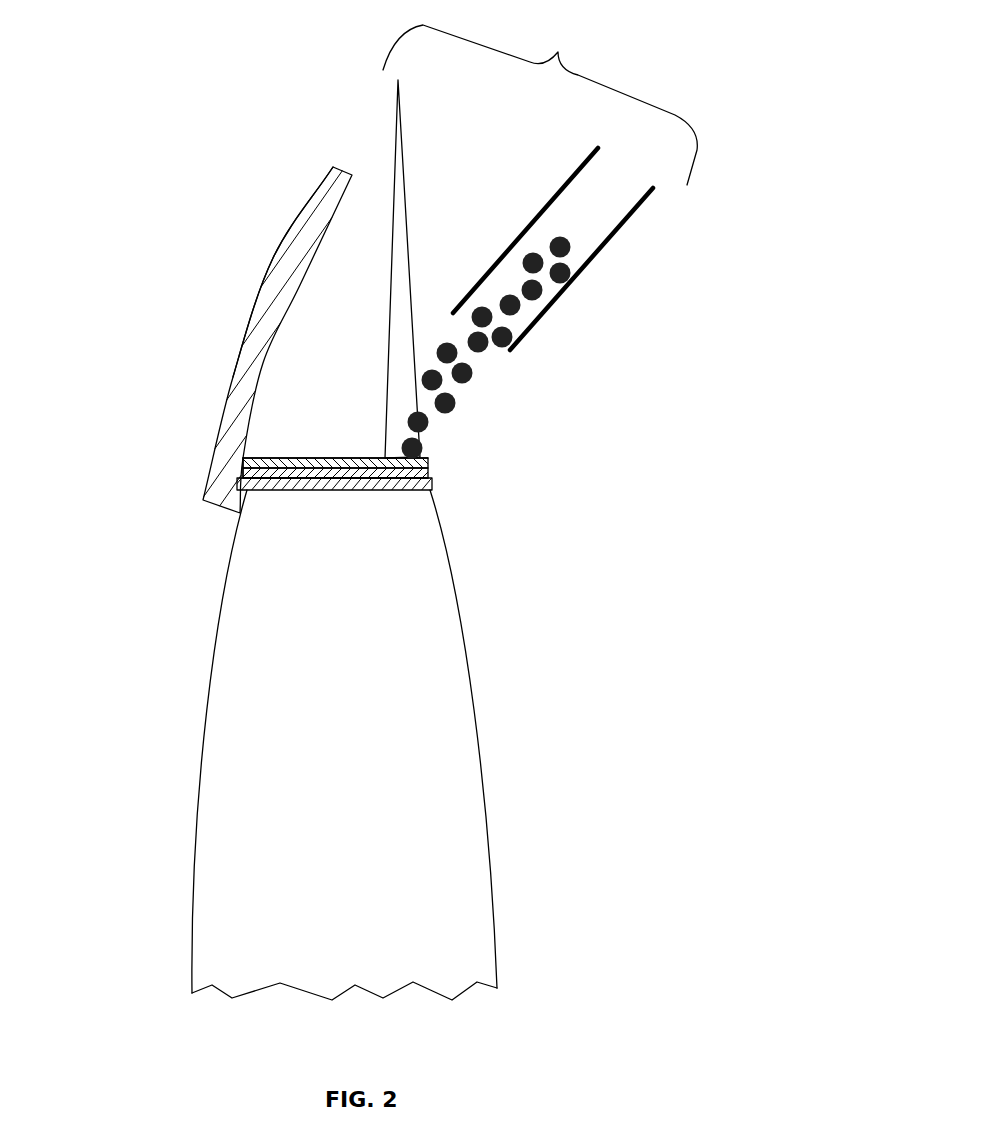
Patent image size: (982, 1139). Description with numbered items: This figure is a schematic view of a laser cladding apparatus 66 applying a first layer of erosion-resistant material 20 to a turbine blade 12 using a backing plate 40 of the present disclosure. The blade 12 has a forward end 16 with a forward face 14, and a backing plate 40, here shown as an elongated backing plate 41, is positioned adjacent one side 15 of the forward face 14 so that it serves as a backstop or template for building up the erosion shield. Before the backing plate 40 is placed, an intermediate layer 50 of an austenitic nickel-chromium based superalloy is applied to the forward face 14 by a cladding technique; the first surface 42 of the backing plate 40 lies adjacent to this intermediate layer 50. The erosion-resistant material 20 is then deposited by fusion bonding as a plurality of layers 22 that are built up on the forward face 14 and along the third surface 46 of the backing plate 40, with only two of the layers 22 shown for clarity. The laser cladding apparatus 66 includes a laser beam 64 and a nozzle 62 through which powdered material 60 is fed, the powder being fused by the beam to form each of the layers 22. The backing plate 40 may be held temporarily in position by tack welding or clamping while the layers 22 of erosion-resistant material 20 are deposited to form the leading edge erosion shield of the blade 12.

The blade 12 is at (728, 410).
The forward face 14 is at (327, 489).
The side 15 is at (217, 617).
The forward end 16 is at (247, 888).
The erosion-resistant material 20 is at (372, 456).
The plurality of layers 22 is at (427, 463).
The backing plate 40 is at (253, 340).
The elongated backing plate 41 is at (260, 298).
The first surface 42 is at (252, 458).
The third surface 46 is at (265, 365).
The intermediate layer 50 is at (400, 489).
The powdered material 60 is at (472, 373).
The nozzle 62 is at (627, 225).
The laser beam 64 is at (402, 233).
The laser cladding apparatus 66 is at (567, 186).